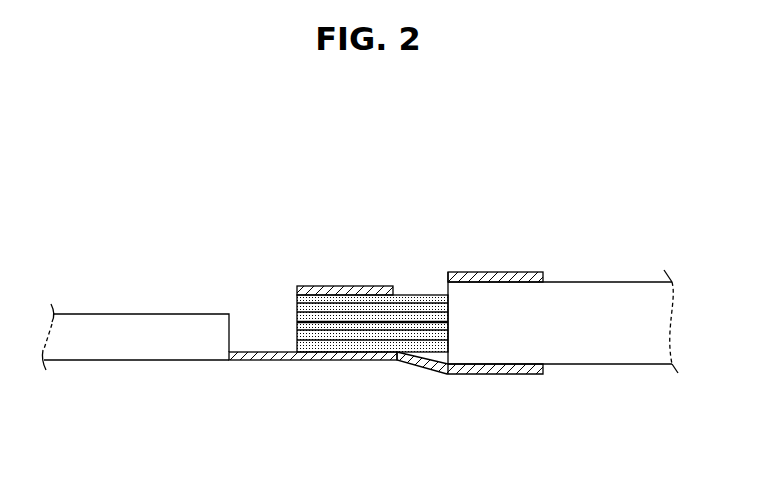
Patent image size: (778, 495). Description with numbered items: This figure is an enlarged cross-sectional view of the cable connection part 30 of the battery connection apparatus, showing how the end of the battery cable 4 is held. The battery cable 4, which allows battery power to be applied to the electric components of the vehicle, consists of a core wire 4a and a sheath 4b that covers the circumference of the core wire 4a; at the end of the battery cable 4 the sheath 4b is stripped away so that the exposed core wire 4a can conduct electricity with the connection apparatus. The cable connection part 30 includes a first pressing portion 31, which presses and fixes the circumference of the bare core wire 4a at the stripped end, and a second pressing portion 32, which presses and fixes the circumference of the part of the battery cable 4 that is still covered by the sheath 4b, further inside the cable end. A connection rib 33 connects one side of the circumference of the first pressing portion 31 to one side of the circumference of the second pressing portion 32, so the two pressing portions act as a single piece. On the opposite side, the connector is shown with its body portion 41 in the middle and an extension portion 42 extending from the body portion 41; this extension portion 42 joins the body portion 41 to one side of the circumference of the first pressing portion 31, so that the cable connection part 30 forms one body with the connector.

The battery cable 4 is at (607, 281).
The body portion 41 is at (121, 352).
The extension portion 42 is at (251, 360).
The core wire 4a is at (345, 345).
The sheath 4b is at (608, 355).
The cable connection part 30 is at (502, 200).
The first pressing portion 31 is at (339, 286).
The second pressing portion 32 is at (495, 272).
The connection rib 33 is at (420, 370).